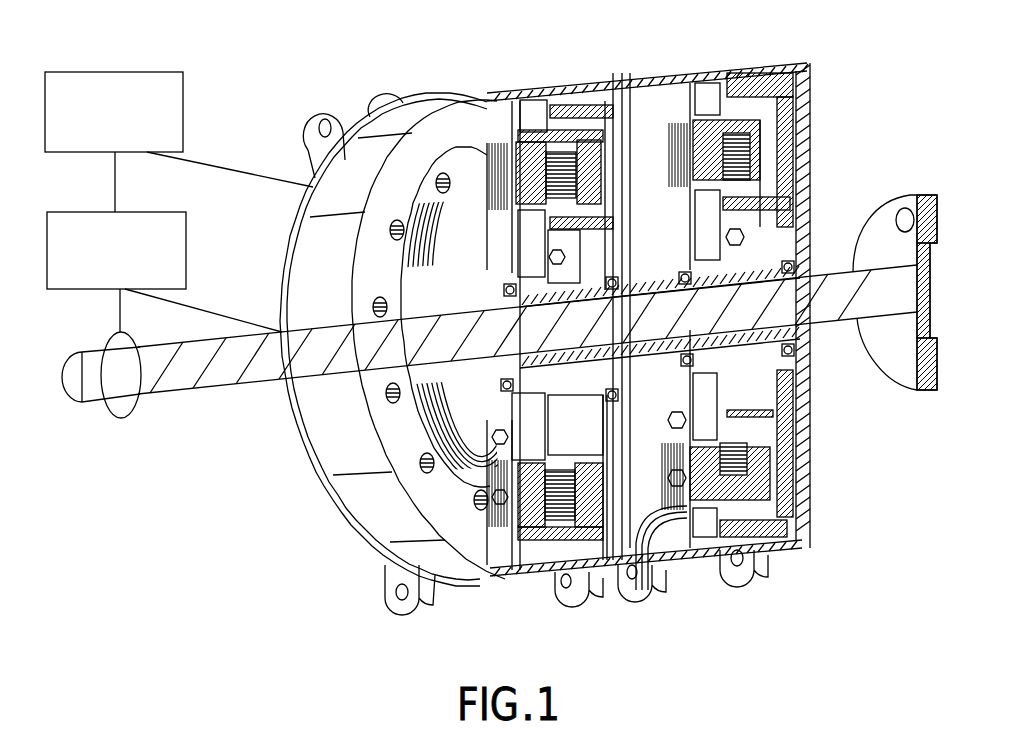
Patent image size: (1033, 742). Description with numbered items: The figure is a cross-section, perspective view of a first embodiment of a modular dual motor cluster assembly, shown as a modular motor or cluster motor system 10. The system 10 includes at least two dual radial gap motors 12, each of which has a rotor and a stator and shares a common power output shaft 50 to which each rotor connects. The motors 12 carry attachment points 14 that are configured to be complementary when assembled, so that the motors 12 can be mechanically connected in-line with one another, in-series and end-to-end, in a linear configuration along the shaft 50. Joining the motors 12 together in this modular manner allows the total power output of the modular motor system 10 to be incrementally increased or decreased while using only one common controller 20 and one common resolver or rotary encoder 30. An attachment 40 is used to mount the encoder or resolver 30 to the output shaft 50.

The modular motor system 10 is at (851, 148).
The dual radial gap motor 12 is at (484, 90).
The attachment points 14 is at (320, 108).
The common controller 20 is at (179, 142).
The common resolver or rotary encoder 30 is at (164, 272).
The attachment 40 is at (120, 418).
The output shaft 50 is at (220, 390).